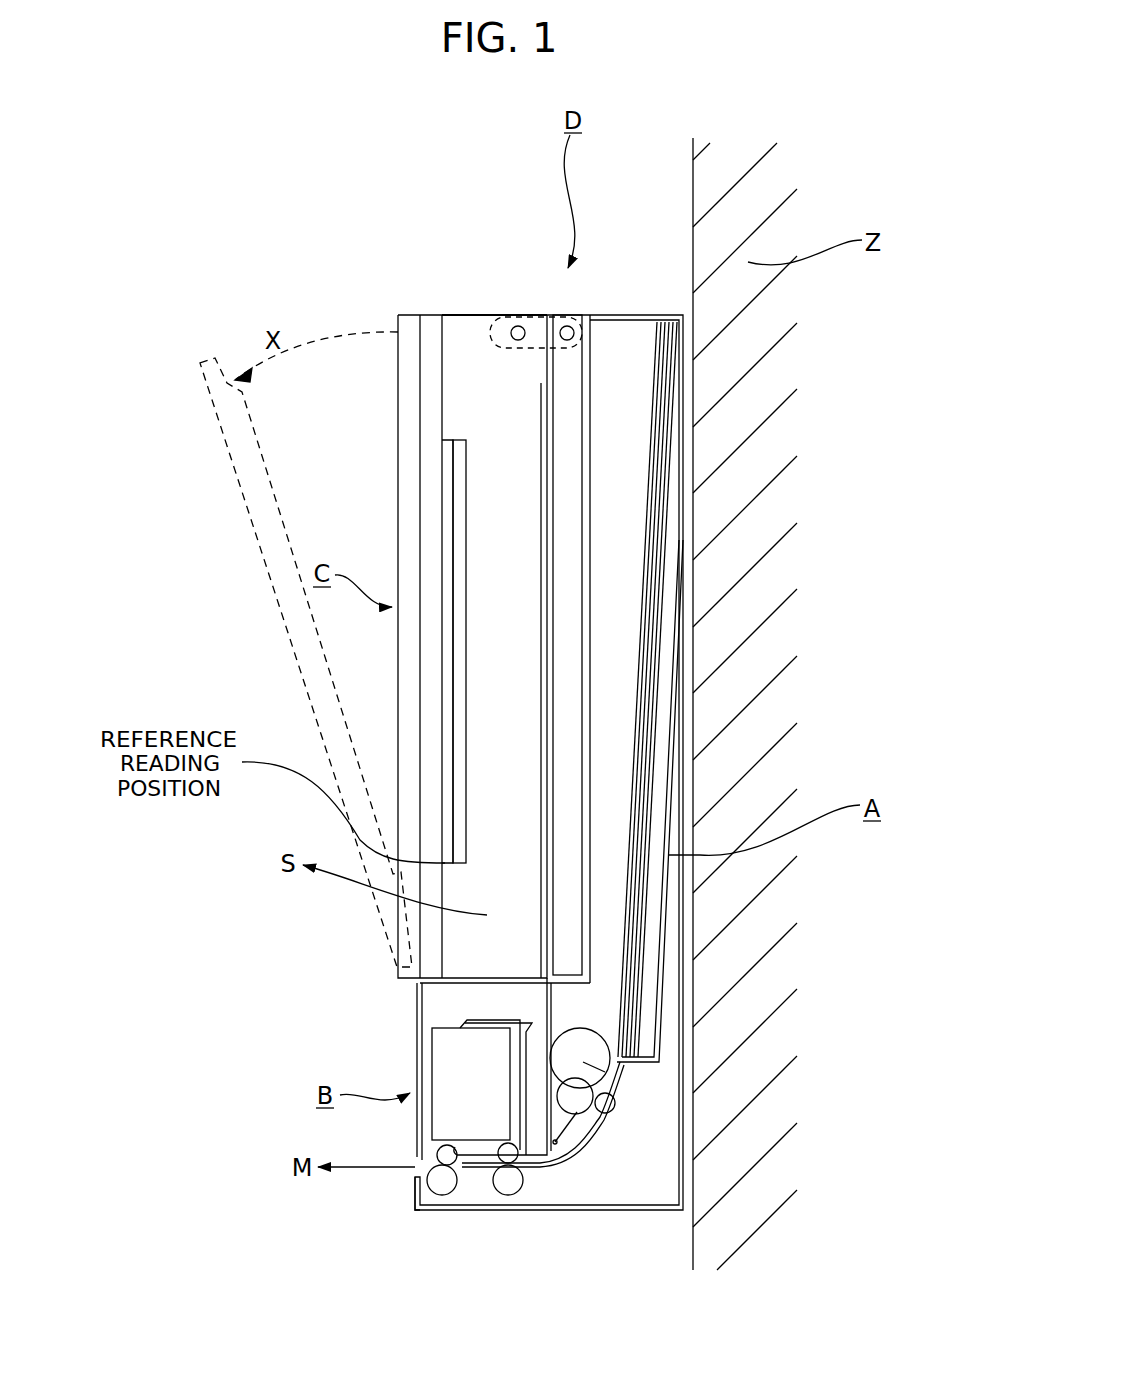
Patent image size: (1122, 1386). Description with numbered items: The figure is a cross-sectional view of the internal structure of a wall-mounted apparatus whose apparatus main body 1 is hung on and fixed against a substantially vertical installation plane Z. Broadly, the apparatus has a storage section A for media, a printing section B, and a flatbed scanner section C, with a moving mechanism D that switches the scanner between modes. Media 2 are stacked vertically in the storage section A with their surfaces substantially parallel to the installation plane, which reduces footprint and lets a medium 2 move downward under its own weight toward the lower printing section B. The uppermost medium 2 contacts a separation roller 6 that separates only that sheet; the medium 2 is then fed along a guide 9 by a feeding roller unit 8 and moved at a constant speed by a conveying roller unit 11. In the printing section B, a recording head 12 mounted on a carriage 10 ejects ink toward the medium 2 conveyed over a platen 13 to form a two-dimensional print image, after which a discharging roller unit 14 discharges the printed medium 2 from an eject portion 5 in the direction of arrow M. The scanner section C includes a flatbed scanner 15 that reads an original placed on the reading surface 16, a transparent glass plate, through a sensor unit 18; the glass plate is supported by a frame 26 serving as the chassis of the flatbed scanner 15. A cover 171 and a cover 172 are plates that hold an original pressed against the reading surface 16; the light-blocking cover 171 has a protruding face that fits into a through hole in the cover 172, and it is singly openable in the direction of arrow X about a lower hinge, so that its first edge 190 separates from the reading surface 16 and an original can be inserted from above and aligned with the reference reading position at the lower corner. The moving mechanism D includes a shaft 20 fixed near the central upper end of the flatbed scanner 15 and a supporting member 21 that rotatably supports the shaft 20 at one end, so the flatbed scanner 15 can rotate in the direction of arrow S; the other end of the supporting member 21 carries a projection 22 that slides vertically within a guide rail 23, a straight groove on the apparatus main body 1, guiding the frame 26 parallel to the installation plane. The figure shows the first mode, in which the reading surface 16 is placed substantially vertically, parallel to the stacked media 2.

The apparatus main body 1 is at (657, 1192).
The media 2 is at (650, 658).
The eject portion 5 is at (413, 1173).
The separation roller 6 is at (608, 1110).
The feeding roller unit 8 is at (573, 1100).
The guide 9 is at (582, 1152).
The carriage 10 is at (490, 1017).
The conveying roller unit 11 is at (508, 1185).
The recording head 12 is at (475, 1145).
The platen 13 is at (478, 1172).
The discharging roller unit 14 is at (437, 1188).
The flatbed scanner 15 is at (477, 310).
The reading surface 16 is at (445, 455).
The sensor unit 18 is at (460, 455).
The shaft 20 is at (523, 326).
The supporting member 21 is at (533, 342).
The projection 22 is at (570, 326).
The guide rail 23 is at (553, 505).
The frame 26 is at (458, 316).
The cover 171 is at (405, 316).
The cover 172 is at (425, 316).
The first edge 190 is at (215, 358).